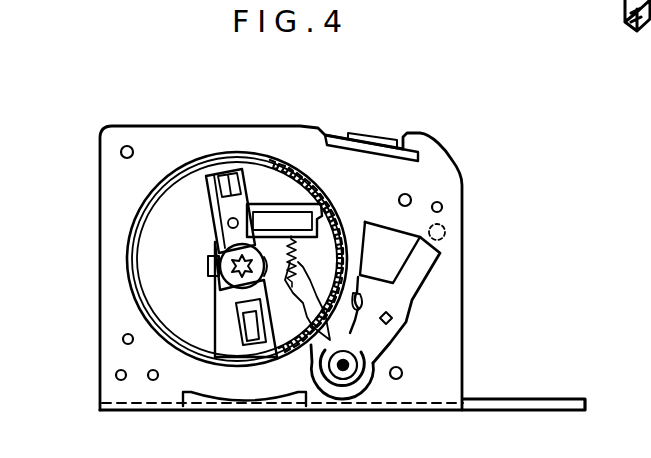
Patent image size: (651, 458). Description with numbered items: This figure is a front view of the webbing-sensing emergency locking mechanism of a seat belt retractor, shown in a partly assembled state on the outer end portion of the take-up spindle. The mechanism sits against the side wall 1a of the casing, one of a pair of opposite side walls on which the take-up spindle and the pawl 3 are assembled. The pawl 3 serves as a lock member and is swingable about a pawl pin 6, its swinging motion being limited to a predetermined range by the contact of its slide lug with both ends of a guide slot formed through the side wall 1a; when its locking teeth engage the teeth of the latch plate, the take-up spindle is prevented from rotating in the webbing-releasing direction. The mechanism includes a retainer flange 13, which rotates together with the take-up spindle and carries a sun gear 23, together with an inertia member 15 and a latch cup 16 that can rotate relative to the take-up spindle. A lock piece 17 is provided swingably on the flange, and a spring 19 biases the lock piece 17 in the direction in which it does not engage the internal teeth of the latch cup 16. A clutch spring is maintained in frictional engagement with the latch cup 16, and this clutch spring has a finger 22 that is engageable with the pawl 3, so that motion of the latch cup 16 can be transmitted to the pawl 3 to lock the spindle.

The side wall 1a is at (452, 178).
The pawl 3 is at (417, 318).
The pawl pin 6 is at (343, 382).
The retainer flange 13 is at (242, 168).
The inertia member 15 is at (150, 267).
The latch cup 16 is at (190, 353).
The lock piece 17 is at (271, 220).
The spring 19 is at (294, 278).
The finger 22 is at (368, 358).
The sun gear 23 is at (227, 278).